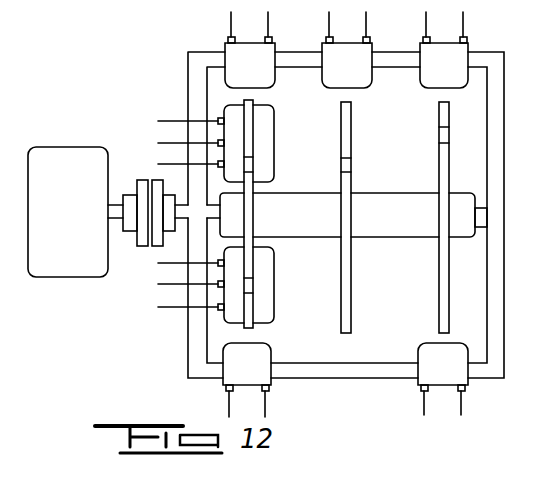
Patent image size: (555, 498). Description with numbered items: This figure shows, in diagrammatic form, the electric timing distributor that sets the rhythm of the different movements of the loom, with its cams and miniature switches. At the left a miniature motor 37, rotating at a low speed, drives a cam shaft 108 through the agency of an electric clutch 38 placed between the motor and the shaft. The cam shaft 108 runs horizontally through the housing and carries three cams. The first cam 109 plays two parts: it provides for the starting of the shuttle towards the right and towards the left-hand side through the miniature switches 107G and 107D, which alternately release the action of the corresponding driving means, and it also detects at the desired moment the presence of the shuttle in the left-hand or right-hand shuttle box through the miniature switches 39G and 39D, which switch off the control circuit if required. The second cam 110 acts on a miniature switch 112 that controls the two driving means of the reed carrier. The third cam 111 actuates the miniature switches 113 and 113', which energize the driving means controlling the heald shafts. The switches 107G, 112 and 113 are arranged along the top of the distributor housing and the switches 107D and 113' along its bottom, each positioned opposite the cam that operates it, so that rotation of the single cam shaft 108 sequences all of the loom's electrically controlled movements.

The miniature motor 37 is at (80, 221).
The electric clutch 38 is at (147, 183).
The miniature switch 39G is at (275, 144).
The miniature switch 39D is at (275, 285).
The miniature switch 107G is at (265, 78).
The miniature switch 107D is at (264, 368).
The cam shaft 108 is at (402, 221).
The cam 109 is at (254, 187).
The cam 110 is at (349, 186).
The third cam 111 is at (447, 186).
The miniature switch 112 is at (358, 78).
The miniature switch 113 is at (444, 50).
The miniature switch 113' is at (443, 379).